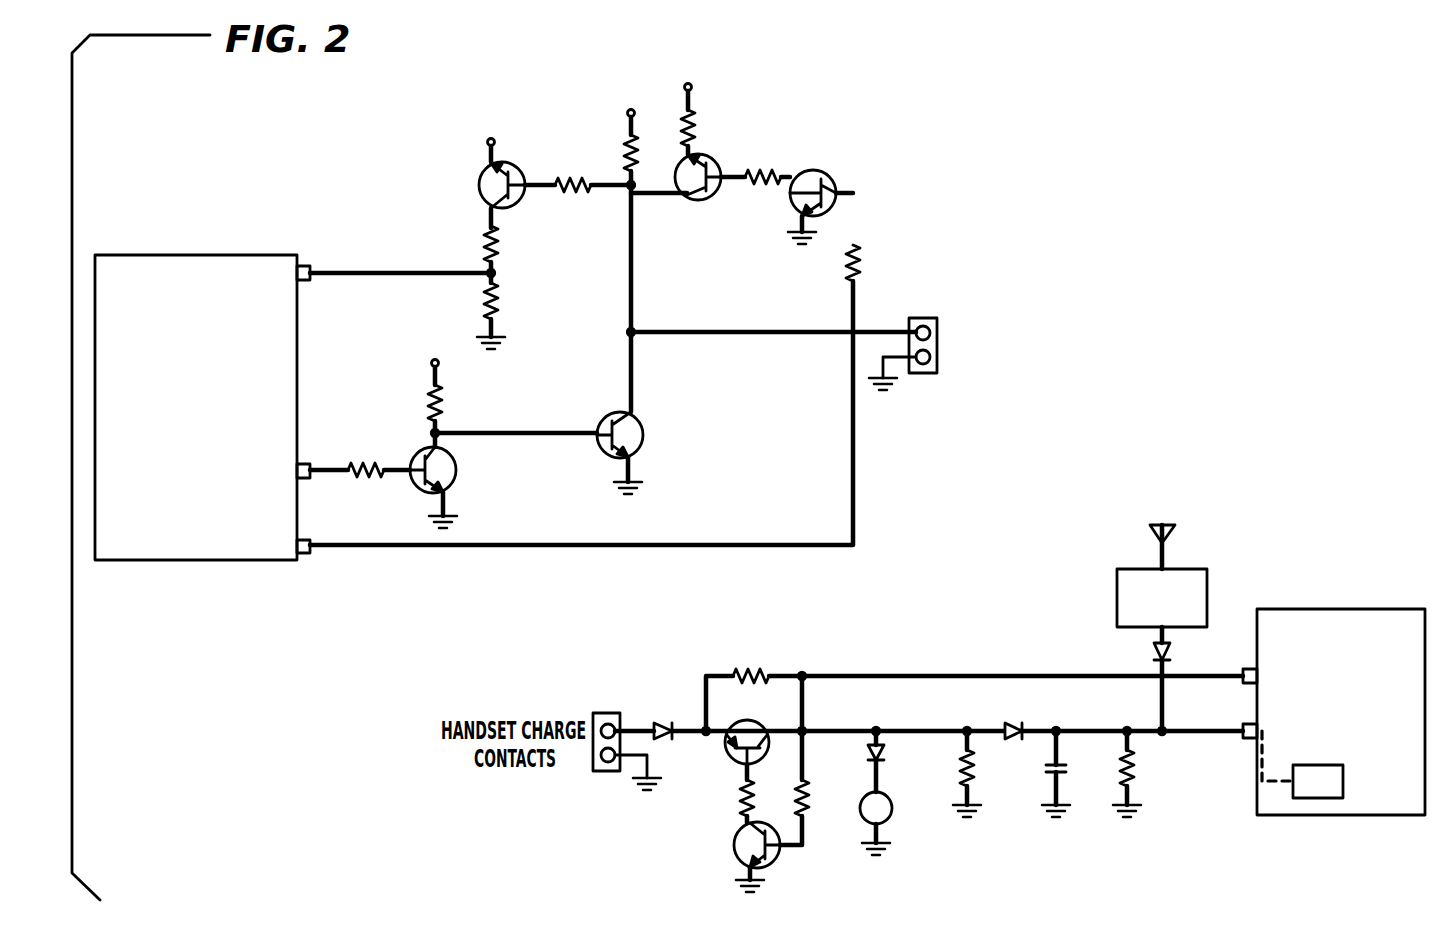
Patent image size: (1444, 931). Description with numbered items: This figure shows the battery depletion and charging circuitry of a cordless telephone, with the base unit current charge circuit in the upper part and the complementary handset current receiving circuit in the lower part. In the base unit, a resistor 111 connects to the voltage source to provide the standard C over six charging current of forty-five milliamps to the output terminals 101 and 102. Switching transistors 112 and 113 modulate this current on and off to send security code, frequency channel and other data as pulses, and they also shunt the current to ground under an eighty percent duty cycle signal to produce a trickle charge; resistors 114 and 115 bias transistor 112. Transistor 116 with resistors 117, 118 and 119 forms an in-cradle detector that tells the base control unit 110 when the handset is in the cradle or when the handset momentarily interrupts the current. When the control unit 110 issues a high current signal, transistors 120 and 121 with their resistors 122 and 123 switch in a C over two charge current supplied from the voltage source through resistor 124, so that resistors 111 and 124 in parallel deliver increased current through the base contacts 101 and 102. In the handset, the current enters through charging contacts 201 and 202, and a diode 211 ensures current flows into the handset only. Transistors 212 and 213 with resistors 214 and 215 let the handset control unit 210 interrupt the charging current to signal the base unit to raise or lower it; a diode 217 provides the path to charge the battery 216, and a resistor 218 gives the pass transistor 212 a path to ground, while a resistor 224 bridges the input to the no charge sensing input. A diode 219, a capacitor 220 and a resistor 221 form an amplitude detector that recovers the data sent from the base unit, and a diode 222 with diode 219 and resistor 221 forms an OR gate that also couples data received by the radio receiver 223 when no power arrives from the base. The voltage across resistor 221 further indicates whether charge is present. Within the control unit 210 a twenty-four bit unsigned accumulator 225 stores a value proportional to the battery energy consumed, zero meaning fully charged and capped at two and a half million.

The output terminal 101 is at (921, 318).
The output terminal 102 is at (925, 373).
The control unit 110 is at (166, 255).
The resistor 111 is at (622, 134).
The switching transistor 112 is at (459, 463).
The switching transistor 113 is at (643, 434).
The resistor 114 is at (366, 456).
The resistor 115 is at (448, 390).
The transistor 116 is at (478, 189).
The resistor 117 is at (578, 171).
The resistor 118 is at (507, 254).
The resistor 119 is at (504, 316).
The transistor 120 is at (704, 198).
The transistor 121 is at (822, 174).
The resistor 122 is at (755, 164).
The resistor 123 is at (870, 263).
The resistor 124 is at (702, 105).
The charging contact 201 is at (612, 716).
The charging contact 202 is at (608, 770).
The control unit 210 is at (1343, 609).
The diode 211 is at (670, 718).
The pass transistor 212 is at (746, 719).
The transistor 213 is at (734, 850).
The resistor 214 is at (728, 801).
The resistor 215 is at (811, 812).
The battery 216 is at (890, 818).
The diode 217 is at (894, 760).
The resistor 218 is at (980, 772).
The diode 219 is at (1012, 718).
The capacitor 220 is at (1070, 772).
The resistor 221 is at (1140, 772).
The diode 222 is at (1180, 681).
The receiver 223 is at (1117, 600).
The radio receiver 224 is at (751, 664).
The accumulator 225 is at (1343, 791).